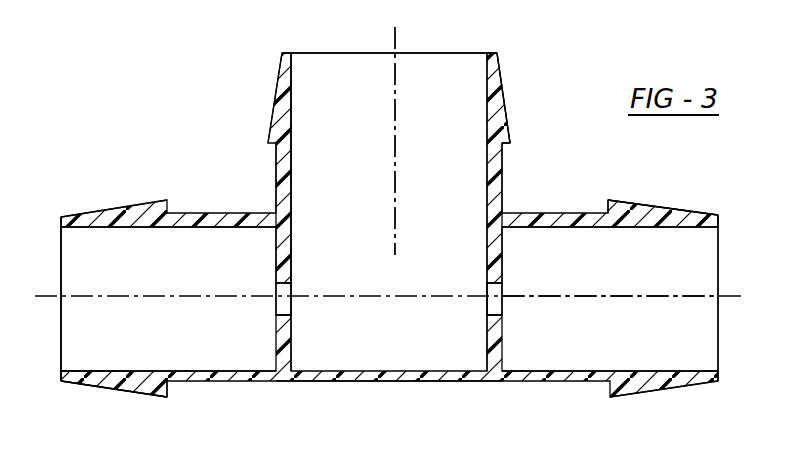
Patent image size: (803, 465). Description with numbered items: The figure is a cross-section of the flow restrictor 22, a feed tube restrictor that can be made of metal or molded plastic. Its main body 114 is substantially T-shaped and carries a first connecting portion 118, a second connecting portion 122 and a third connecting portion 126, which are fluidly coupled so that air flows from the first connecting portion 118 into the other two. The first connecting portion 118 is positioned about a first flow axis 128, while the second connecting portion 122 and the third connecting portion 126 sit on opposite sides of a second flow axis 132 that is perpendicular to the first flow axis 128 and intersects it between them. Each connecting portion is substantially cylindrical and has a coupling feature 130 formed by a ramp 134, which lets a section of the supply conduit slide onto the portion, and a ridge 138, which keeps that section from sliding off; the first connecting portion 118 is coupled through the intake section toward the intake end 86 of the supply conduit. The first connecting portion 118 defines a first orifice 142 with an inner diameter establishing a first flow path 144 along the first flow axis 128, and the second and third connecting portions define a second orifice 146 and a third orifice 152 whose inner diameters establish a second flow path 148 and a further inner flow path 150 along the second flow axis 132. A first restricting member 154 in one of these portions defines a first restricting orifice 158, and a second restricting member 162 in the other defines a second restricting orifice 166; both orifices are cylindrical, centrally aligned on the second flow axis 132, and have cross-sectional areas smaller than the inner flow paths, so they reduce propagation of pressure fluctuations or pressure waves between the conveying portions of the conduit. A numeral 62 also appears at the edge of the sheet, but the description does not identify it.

The flow restrictor 22 is at (145, 114).
The main body 114 is at (373, 383).
The first connecting portion 118 is at (425, 52).
The second connecting portion 122 is at (61, 264).
The third connecting portion 126 is at (718, 248).
The first flow axis 128 is at (395, 116).
The coupling feature 130 is at (497, 55).
The second flow axis 132 is at (665, 300).
The ramp 134 is at (500, 92).
The ridge 138 is at (507, 158).
The first orifice 142 is at (290, 107).
The first flow path 144 is at (363, 103).
The second orifice 146 is at (117, 371).
The second flow path 148 is at (118, 315).
The inner flow path 150 is at (690, 370).
The third orifice 152 is at (677, 333).
The first restricting member 154 is at (277, 258).
The first restricting orifice 158 is at (282, 312).
The second restricting member 162 is at (500, 253).
The second restricting orifice 166 is at (500, 310).
The intake end 86 is at (548, 464).
The component 62 is at (660, 464).